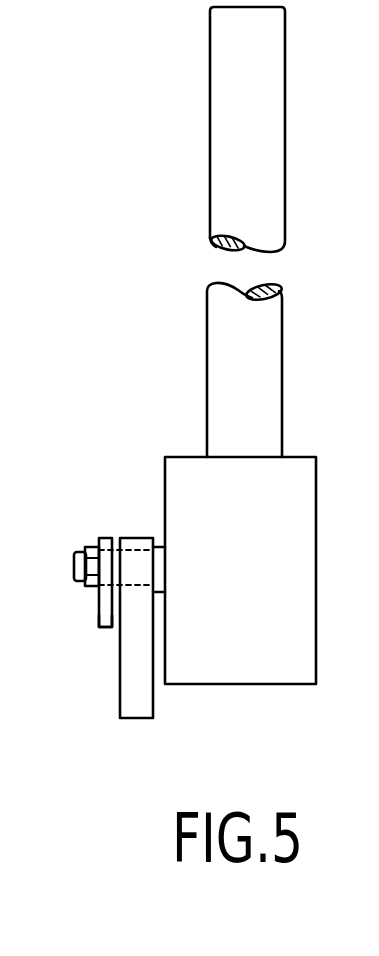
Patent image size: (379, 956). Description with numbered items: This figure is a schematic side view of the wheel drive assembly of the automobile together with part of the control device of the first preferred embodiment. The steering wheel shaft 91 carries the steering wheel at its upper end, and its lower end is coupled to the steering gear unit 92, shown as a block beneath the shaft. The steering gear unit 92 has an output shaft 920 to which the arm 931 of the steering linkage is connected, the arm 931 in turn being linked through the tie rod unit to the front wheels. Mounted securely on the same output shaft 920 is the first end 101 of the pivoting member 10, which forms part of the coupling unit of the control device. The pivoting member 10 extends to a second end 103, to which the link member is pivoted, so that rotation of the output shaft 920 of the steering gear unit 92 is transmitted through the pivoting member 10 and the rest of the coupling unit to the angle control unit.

The steering wheel shaft 91 is at (245, 172).
The steering gear unit 92 is at (297, 470).
The arm 931 is at (135, 712).
The output shaft 920 is at (140, 558).
The first end 101 is at (105, 538).
The pivoting member 10 is at (102, 592).
The second end 103 is at (100, 622).